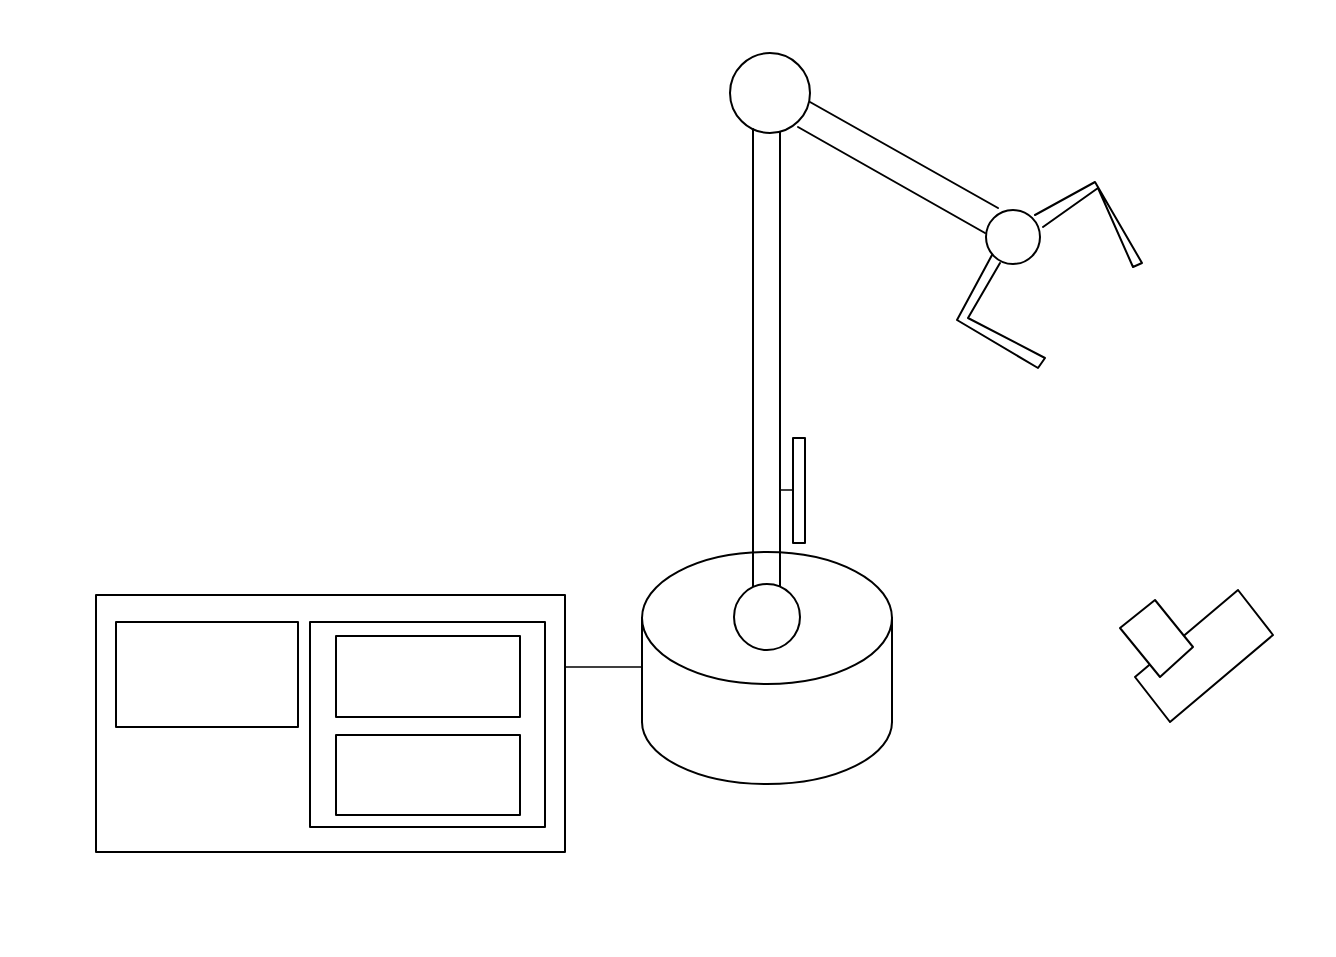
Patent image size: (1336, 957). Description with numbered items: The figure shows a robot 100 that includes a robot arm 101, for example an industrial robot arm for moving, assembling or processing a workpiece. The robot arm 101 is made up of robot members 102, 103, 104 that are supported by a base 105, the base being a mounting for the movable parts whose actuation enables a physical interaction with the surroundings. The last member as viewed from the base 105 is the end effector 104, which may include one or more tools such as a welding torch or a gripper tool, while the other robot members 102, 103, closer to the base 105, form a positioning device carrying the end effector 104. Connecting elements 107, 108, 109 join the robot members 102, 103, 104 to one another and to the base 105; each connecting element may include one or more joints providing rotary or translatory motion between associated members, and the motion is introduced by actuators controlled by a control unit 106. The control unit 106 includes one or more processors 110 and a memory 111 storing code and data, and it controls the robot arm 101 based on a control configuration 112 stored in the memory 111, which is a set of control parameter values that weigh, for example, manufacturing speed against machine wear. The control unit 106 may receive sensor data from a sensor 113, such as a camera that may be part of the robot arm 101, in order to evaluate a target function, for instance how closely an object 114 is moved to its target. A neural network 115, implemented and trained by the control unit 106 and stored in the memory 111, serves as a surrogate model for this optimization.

The robot 100 is at (1052, 106).
The robot arm 101 is at (704, 192).
The robot member 102 is at (767, 317).
The robot member 103 is at (937, 187).
The end effector 104 is at (1113, 227).
The base 105 is at (872, 687).
The control unit 106 is at (330, 595).
The connecting element 107 is at (782, 607).
The connecting element 108 is at (743, 93).
The connecting element 109 is at (1028, 245).
The processor 110 is at (230, 690).
The memory 111 is at (428, 622).
The control configuration 112 is at (451, 692).
The sensor 113 is at (800, 450).
The object 114 is at (1212, 616).
The neural network 115 is at (451, 790).